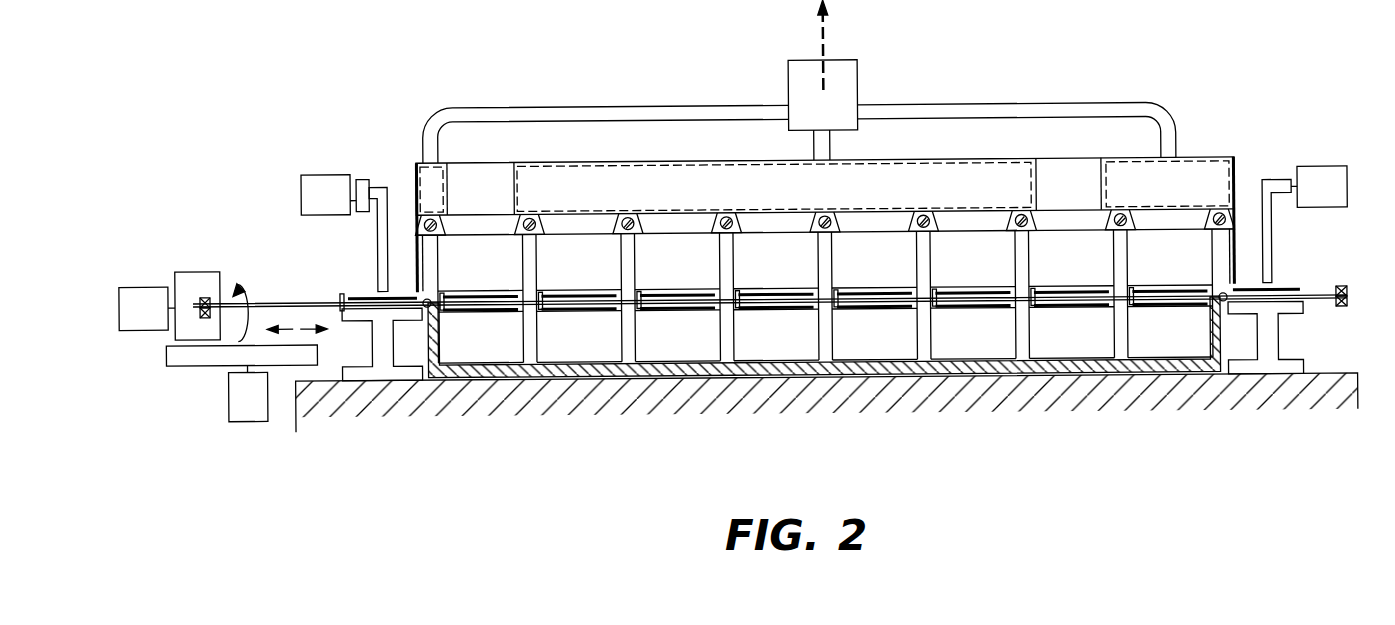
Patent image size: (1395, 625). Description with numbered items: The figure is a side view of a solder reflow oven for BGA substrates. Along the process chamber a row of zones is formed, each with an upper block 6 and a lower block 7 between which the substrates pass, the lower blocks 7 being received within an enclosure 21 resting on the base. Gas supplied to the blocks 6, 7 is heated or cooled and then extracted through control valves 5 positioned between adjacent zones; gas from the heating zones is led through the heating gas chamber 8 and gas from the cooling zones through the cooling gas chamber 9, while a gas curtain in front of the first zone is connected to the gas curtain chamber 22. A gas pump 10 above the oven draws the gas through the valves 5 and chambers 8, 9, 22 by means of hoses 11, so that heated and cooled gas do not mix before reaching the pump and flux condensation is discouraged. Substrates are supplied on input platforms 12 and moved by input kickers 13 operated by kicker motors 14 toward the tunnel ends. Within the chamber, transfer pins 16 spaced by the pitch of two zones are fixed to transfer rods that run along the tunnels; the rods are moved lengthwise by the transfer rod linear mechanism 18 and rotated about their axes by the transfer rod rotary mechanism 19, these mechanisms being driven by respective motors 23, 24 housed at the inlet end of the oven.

The control valve 5 is at (530, 214).
The upper block 6 is at (478, 258).
The lower block 7 is at (501, 343).
The heating gas chamber 8 is at (972, 185).
The cooling gas chamber 9 is at (1202, 181).
The gas pump 10 is at (847, 59).
The hose 11 is at (620, 104).
The input platform 12 is at (380, 368).
The input kicker 13 is at (365, 183).
The kicker motor 14 is at (320, 193).
The transfer pin 16 is at (638, 291).
The transfer rod linear mechanism 18 is at (193, 352).
The transfer rod rotary mechanism 19 is at (197, 277).
The enclosure 21 is at (467, 369).
The gas curtain chamber 22 is at (420, 163).
The motor 23 is at (247, 393).
The motor 24 is at (135, 300).